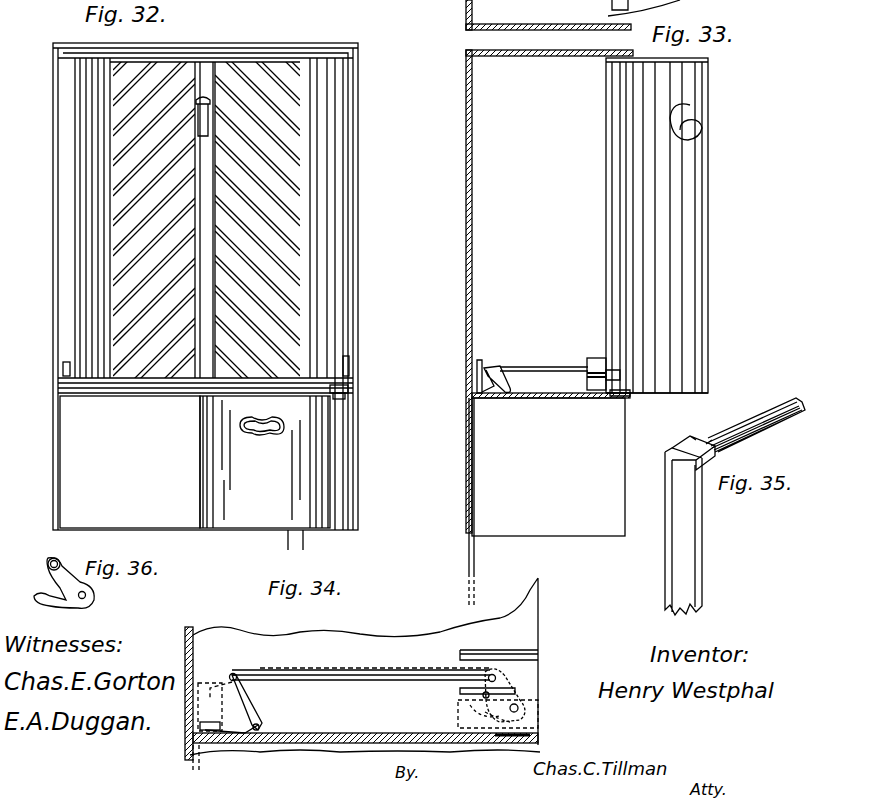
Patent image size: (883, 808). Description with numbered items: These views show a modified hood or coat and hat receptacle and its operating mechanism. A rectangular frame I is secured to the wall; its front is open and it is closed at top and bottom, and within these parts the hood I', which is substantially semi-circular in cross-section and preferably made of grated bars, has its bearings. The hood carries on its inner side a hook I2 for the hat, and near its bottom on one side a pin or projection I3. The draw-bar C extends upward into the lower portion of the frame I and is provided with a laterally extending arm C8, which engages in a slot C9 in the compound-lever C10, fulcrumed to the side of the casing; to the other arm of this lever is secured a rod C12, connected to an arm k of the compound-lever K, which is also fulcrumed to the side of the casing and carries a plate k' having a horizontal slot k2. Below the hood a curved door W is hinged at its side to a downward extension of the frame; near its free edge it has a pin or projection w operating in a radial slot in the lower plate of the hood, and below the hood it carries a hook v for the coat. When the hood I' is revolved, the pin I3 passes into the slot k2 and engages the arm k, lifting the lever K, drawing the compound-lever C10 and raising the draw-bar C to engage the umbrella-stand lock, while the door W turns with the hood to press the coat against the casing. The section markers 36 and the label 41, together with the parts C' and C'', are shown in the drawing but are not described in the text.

In FIG. 32, the rectangular frame I is at (210, 286).
In FIG. 33, the rectangular frame I is at (587, 291).
In FIG. 34, the rectangular frame I is at (362, 669).
In FIG. 32, the hood I' is at (206, 233).
In FIG. 33, the hood I' is at (673, 225).
In FIG. 32, the hook I2 is at (195, 136).
In FIG. 33, the hook I2 is at (692, 118).
In FIG. 32, the pin or projection I3 is at (66, 368).
In FIG. 33, the pin or projection I3 is at (636, 393).
In FIG. 34, the pin or projection I3 is at (486, 700).
In FIG. 36, the arm k is at (41, 554).
In FIG. 34, the arm k is at (517, 676).
In FIG. 32, the plate k' is at (362, 362).
In FIG. 33, the plate k' is at (596, 361).
In FIG. 34, the plate k' is at (460, 718).
In FIG. 33, the horizontal slot k2 is at (587, 378).
In FIG. 34, the horizontal slot k2 is at (478, 688).
In FIG. 36, the compound-lever K is at (100, 598).
In FIG. 34, the compound-lever K is at (530, 702).
In FIG. 32, the draw-bar C is at (280, 542).
In FIG. 33, the draw-bar C is at (483, 501).
In FIG. 35, the draw-bar C is at (690, 525).
In FIG. 34, the draw-bar C is at (191, 726).
In FIG. 33, the rod bracket C' is at (459, 376).
In FIG. 32, the bell-crank lever C'' is at (365, 385).
In FIG. 33, the bell-crank lever C'' is at (499, 364).
In FIG. 34, the bell-crank lever C'' is at (255, 702).
In FIG. 33, the rod C12 is at (550, 366).
In FIG. 34, the rod C12 is at (375, 682).
In FIG. 35, the laterally extending arm C8 is at (755, 425).
In FIG. 34, the slot C9 is at (208, 732).
In FIG. 34, the compound-lever C10 is at (256, 738).
In FIG. 32, the curved door W is at (261, 460).
In FIG. 33, the curved door W is at (548, 467).
In FIG. 32, the pin or projection w is at (347, 396).
In FIG. 32, the hook v is at (262, 434).
In FIG. 32, the section line 36 is at (44, 33).
In FIG. 35, the figure reference 41 is at (757, 385).